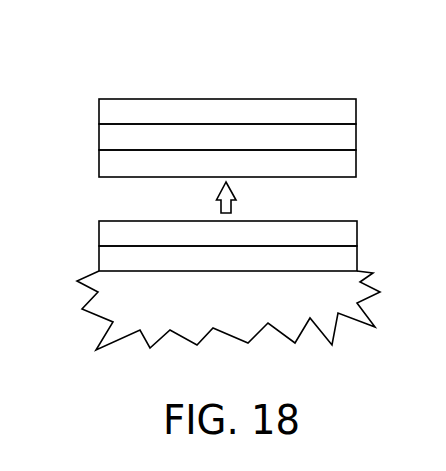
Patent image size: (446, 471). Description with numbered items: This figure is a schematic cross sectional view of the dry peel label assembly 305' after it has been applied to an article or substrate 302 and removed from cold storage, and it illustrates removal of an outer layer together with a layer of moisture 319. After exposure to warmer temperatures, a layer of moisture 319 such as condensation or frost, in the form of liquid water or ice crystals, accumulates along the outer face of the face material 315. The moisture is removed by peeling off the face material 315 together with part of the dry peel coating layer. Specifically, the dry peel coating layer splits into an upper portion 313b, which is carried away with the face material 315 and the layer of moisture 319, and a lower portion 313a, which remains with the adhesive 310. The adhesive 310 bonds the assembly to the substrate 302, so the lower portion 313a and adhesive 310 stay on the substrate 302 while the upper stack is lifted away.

The dry peel label assembly 305' is at (174, 109).
The layer of moisture 319 is at (100, 108).
The face material 315 is at (100, 142).
The upper portion of dry peel coating layer 313b is at (100, 172).
The lower portion of dry peel coating layer 313a is at (100, 235).
The adhesive 310 is at (100, 268).
The substrate 302 is at (140, 331).